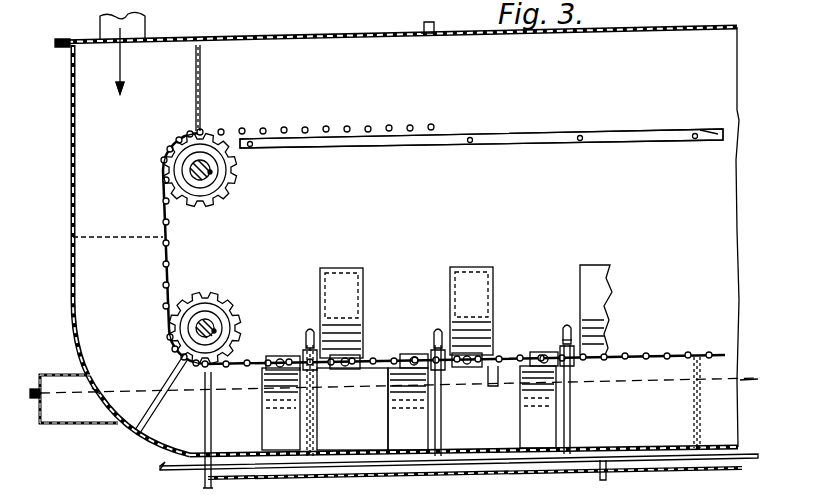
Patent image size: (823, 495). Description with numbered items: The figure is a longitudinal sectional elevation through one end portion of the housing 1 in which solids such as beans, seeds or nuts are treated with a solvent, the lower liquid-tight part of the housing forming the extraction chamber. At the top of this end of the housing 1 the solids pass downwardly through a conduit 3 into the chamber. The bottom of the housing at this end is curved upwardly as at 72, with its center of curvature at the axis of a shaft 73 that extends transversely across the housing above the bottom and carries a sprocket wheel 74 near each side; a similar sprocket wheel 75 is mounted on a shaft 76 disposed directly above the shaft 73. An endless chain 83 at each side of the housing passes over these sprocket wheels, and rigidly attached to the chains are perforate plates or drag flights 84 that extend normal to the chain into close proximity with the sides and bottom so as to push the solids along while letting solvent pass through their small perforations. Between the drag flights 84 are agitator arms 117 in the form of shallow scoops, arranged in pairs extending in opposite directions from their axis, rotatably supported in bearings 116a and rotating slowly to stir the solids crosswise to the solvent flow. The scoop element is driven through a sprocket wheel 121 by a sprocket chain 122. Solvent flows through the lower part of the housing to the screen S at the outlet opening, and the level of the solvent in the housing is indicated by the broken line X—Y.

The housing 1 is at (664, 28).
The conduit 3 is at (140, 26).
The curved bottom portion 72 is at (118, 432).
The shaft 73 is at (222, 310).
The sprocket wheel 74 is at (208, 322).
The sprocket wheel 75 is at (238, 172).
The shaft 76 is at (208, 178).
The endless chain 83 is at (398, 128).
The perforate plate or drag flight 84 is at (196, 95).
The bearing 116a is at (560, 340).
The agitator arm 117 is at (365, 284).
The sprocket wheel 121 is at (490, 364).
The sprocket chain 122 is at (492, 380).
The screen S is at (96, 388).
The broken line X—Y X is at (400, 387).
The broken line X— Y is at (778, 380).